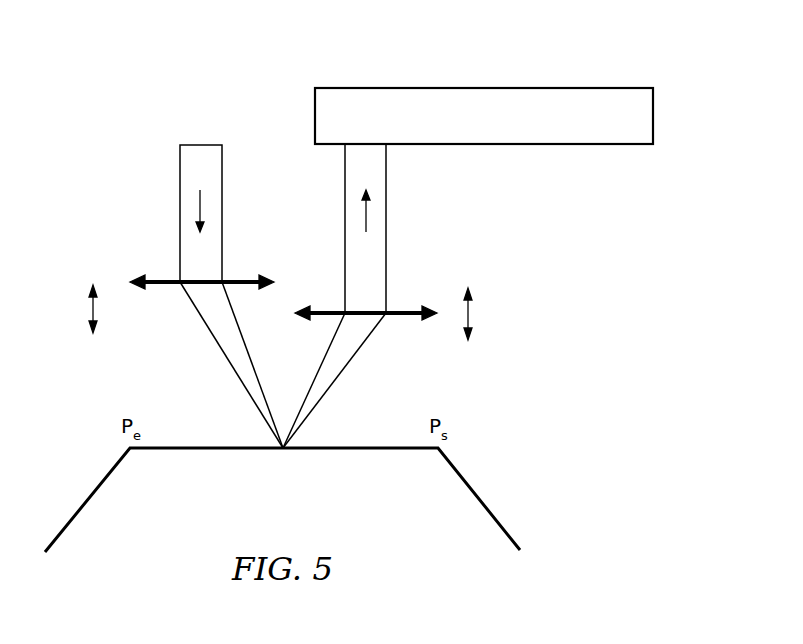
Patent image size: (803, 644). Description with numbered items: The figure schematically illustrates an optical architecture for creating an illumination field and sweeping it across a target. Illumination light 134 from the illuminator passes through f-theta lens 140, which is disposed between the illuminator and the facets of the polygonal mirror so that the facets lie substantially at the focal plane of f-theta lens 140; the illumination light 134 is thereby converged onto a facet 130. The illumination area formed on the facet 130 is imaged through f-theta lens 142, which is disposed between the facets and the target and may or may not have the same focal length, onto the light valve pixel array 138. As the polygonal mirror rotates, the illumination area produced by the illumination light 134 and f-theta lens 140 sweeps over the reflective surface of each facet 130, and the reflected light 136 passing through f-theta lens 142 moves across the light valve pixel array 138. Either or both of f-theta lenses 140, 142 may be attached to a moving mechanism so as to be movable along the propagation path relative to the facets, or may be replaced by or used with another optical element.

The facet 130 is at (212, 446).
The illumination light 134 is at (180, 180).
The reflected light 136 is at (387, 212).
The light valve pixel array 138 is at (518, 87).
The f-theta lens 140 is at (165, 288).
The f-theta lens 142 is at (400, 318).